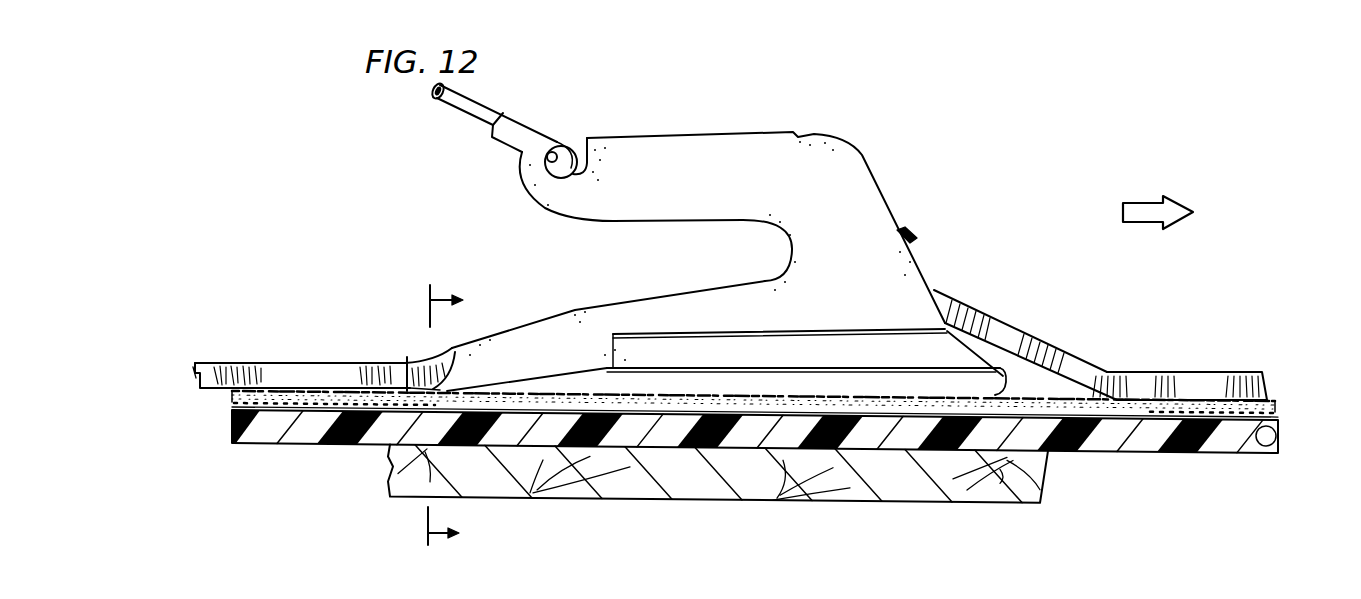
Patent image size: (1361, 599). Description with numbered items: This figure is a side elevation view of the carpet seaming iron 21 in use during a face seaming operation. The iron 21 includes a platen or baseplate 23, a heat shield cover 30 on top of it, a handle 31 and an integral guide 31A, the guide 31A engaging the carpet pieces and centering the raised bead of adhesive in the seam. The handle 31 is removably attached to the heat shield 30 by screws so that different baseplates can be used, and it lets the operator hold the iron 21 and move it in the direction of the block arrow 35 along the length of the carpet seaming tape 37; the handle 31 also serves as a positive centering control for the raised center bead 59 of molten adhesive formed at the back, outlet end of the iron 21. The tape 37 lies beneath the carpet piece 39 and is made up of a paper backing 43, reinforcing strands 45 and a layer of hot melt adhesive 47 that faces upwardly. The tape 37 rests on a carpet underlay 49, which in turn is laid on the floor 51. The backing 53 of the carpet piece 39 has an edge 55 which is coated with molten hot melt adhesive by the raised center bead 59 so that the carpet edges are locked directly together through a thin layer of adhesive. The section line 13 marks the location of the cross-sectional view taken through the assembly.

The iron 21 is at (835, 95).
The handle 31 is at (864, 190).
The integral guide 31A is at (527, 341).
The heat shield cover 30 is at (888, 347).
The platen or baseplate 23 is at (810, 386).
The backing 53 is at (437, 384).
The edge 55 is at (322, 367).
The raised center bead 59 is at (415, 386).
The carpet piece 39 is at (1182, 370).
The layer of hot melt adhesive 47 is at (1208, 400).
The carpet seaming tape 37 is at (1281, 424).
The reinforcing strands 45 is at (230, 404).
The paper backing 43 is at (1276, 440).
The carpet underlay 49 is at (1232, 446).
The floor 51 is at (973, 490).
The block arrow 35 is at (1146, 208).
The section line 13- 13 is at (463, 416).